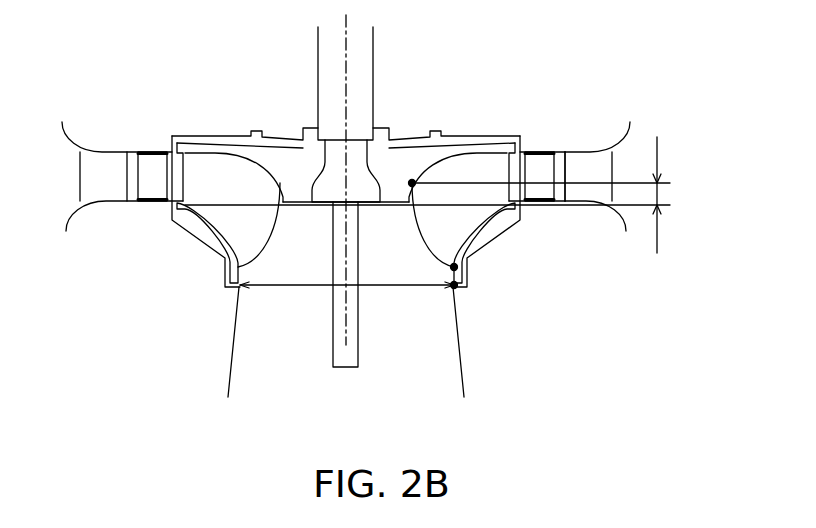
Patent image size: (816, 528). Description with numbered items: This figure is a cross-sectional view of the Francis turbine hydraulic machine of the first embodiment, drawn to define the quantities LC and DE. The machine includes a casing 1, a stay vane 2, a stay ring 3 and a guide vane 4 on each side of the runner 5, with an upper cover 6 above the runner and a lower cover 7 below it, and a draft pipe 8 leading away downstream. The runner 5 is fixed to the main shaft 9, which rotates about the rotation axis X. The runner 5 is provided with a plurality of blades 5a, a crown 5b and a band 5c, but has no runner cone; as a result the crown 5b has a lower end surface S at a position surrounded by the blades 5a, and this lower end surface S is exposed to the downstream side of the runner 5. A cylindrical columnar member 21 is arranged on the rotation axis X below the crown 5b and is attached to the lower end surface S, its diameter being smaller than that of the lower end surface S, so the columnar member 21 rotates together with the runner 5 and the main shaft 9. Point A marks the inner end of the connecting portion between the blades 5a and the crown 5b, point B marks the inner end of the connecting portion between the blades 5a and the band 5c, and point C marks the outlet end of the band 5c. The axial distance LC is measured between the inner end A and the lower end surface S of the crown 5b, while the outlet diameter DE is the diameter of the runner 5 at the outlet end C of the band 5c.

The casing 1 is at (627, 145).
The stay vane 2 is at (598, 157).
The stay ring 3 is at (585, 147).
The guide vane 4 is at (540, 165).
The runner 5 is at (408, 157).
The blades 5a is at (217, 196).
The crown 5b is at (207, 147).
The band 5c is at (225, 230).
The upper cover 6 is at (465, 138).
The lower cover 7 is at (491, 226).
The draft pipe 8 is at (447, 370).
The main shaft 9 is at (362, 55).
The columnar member 21 is at (340, 338).
The rotation axis X is at (320, 50).
The lower end surface S is at (302, 197).
The inner end of the connecting portion between the blades and the crown A is at (412, 183).
The inner end of the connecting portion between the blades and the band B is at (452, 268).
The outlet end of the band C is at (453, 287).
The outlet diameter of the runner DE is at (347, 272).
The axial distance LC is at (658, 196).